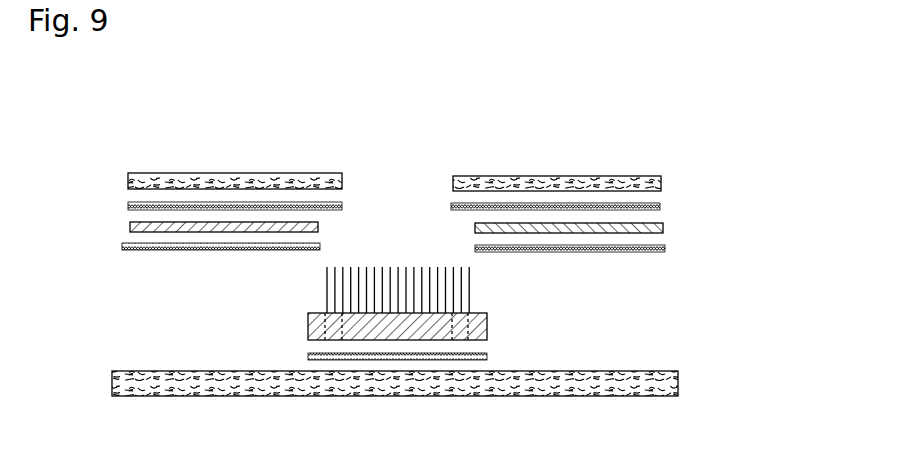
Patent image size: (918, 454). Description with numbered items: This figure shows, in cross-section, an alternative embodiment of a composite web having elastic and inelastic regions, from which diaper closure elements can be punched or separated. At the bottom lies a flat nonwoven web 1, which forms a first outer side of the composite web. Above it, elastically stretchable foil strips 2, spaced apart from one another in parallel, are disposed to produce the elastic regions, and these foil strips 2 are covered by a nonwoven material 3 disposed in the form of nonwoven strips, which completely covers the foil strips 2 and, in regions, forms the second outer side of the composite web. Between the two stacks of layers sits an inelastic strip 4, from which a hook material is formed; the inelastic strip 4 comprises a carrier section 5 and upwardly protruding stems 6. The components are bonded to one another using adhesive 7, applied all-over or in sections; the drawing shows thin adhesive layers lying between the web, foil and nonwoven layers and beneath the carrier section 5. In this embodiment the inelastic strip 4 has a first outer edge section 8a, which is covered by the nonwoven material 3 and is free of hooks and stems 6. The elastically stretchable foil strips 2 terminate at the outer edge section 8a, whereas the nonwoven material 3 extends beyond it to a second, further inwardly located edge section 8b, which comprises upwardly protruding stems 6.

The nonwoven web 1 is at (623, 397).
The elastically stretchable foil strips 2 is at (667, 228).
The nonwoven material 3 is at (663, 187).
The inelastic strip 4 is at (289, 337).
The carrier section 5 is at (308, 317).
The stems 6 is at (473, 282).
The adhesive 7 is at (669, 244).
The first outer edge section 8a is at (308, 327).
The second edge section 8b is at (307, 340).